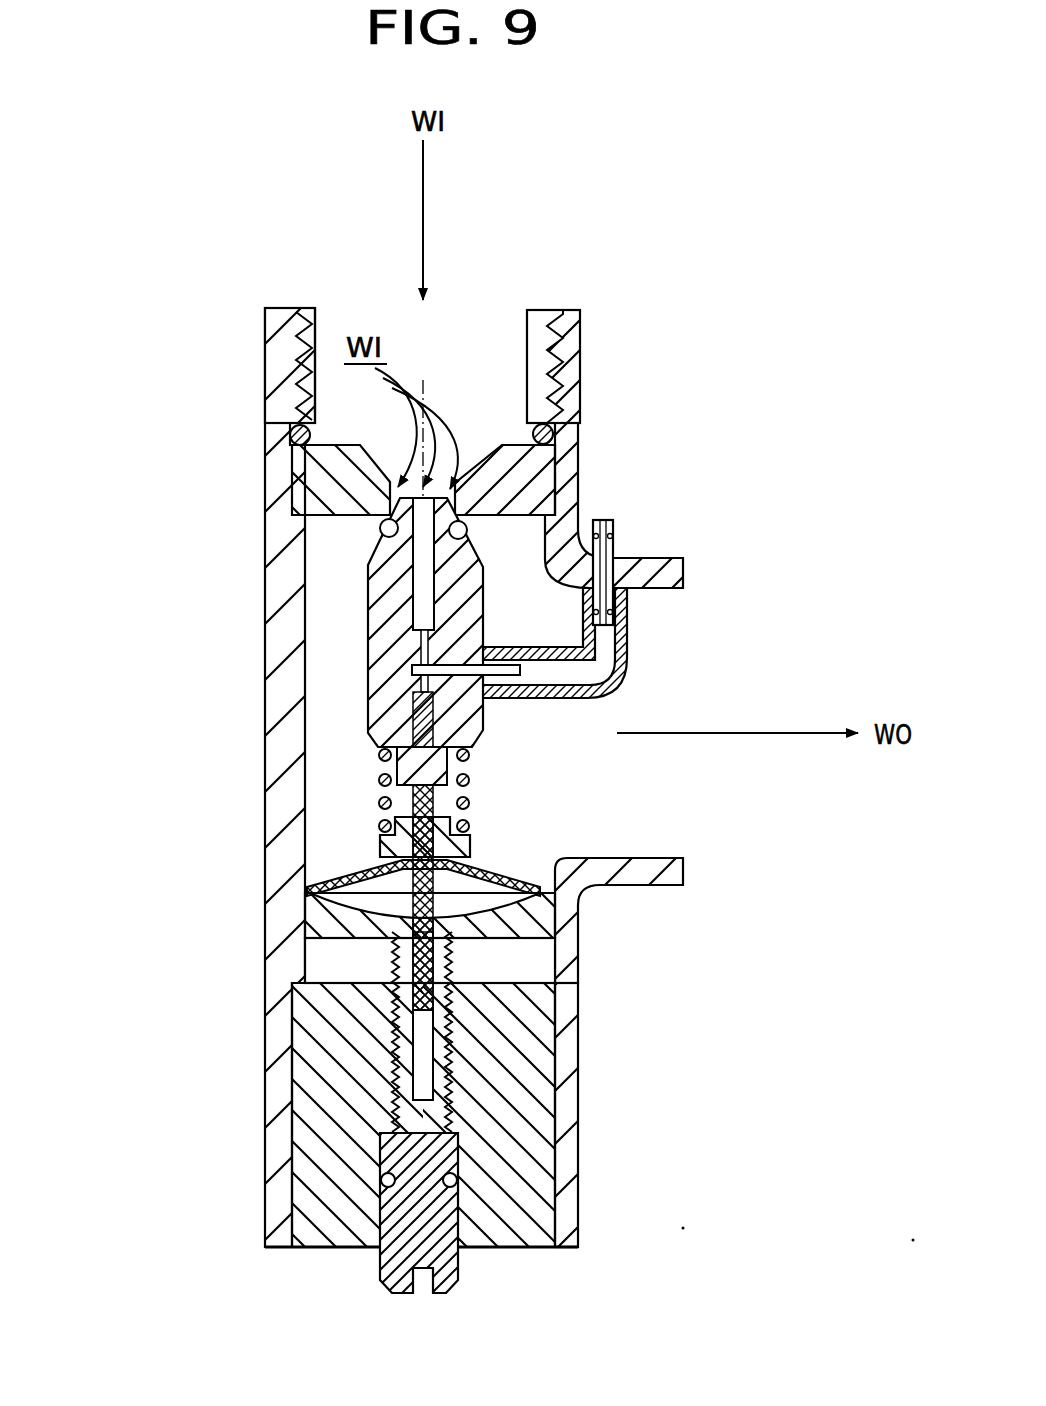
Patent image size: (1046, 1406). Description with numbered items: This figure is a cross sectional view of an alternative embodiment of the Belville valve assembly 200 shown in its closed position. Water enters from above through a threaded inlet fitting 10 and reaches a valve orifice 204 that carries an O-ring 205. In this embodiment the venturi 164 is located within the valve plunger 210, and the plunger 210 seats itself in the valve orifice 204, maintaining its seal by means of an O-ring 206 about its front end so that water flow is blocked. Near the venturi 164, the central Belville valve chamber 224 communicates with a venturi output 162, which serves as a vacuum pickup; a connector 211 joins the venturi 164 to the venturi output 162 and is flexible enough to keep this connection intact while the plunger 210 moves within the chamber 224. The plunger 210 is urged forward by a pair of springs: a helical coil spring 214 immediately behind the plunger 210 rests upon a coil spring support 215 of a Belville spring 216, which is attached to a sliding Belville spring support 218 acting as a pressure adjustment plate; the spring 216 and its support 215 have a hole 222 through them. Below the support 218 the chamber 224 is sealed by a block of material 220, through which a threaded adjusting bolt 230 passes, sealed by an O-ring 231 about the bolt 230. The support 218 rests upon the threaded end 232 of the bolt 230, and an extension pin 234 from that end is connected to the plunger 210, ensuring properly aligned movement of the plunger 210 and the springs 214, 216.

The Belville valve assembly 200 is at (145, 345).
The threaded inlet connector 10 is at (542, 308).
The valve orifice 204 is at (493, 445).
The O-ring 205 is at (560, 424).
The O-ring 206 is at (378, 528).
The venturi 164 is at (408, 622).
The Belville valve chamber 224 is at (550, 616).
The venturi output 162 is at (619, 540).
The connector 211 is at (632, 640).
The valve plunger 210 is at (486, 714).
The helical coil spring 214 is at (380, 806).
The coil spring support 215 is at (474, 840).
The hole 222 is at (472, 858).
The Belville spring 216 is at (513, 873).
The extension pin 234 is at (415, 893).
The block of material 220 is at (540, 1104).
The sliding Belville spring support 218 is at (520, 940).
The threaded end 232 is at (390, 960).
The O-ring 231 is at (378, 1180).
The adjusting bolt 230 is at (451, 1293).